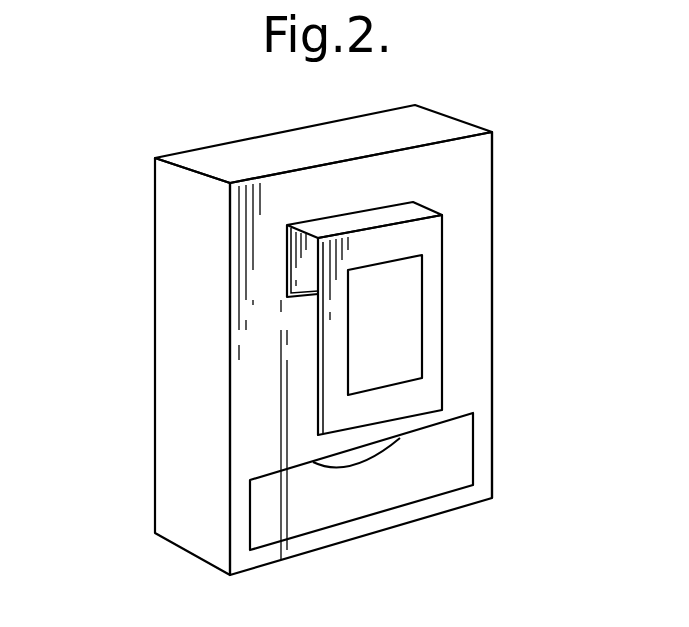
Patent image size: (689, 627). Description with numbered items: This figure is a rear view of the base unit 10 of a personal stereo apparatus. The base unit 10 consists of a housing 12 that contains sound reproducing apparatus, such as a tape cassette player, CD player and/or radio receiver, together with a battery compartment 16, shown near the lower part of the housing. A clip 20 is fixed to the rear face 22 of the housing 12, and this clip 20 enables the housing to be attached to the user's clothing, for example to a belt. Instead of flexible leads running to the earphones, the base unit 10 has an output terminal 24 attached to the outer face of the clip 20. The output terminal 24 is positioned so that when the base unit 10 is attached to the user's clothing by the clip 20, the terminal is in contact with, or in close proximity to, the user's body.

The base unit 10 is at (472, 193).
The housing 12 is at (193, 244).
The battery compartment 16 is at (458, 452).
The clip 20 is at (432, 303).
The rear face 22 is at (480, 247).
The output terminal 24 is at (405, 350).